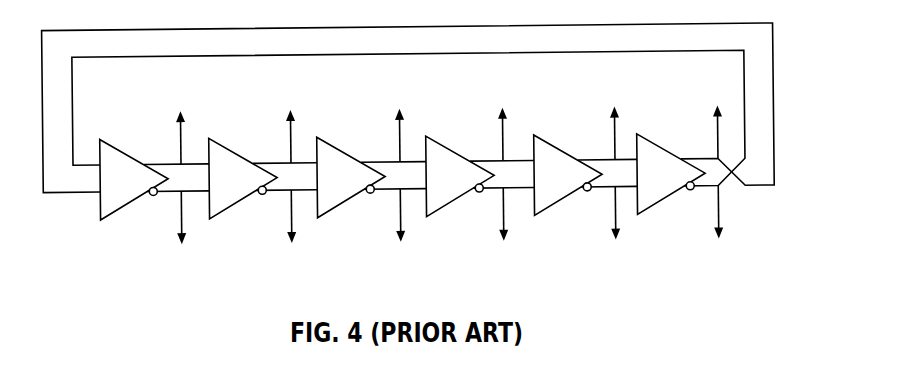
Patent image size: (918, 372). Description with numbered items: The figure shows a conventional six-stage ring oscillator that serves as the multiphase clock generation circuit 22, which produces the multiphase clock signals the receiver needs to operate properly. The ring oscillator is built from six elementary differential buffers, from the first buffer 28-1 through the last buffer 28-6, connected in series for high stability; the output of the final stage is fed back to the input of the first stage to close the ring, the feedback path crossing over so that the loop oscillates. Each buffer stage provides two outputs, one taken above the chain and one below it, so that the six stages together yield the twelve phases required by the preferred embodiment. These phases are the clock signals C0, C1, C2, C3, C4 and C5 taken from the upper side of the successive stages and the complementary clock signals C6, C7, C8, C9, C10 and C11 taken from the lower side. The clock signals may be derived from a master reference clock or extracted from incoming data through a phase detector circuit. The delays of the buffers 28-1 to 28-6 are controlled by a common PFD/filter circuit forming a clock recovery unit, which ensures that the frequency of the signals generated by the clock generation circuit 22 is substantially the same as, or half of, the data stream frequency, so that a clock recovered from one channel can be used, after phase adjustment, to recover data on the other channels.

The multiphase clock generation circuit 22 is at (780, 81).
The elementary differential buffer 28-1 is at (118, 148).
The elementary differential buffer 28-6 is at (660, 206).
The multiphase clock signal C0 is at (180, 127).
The multiphase clock signal C1 is at (290, 126).
The multiphase clock signal C2 is at (399, 125).
The multiphase clock signal C3 is at (502, 124).
The multiphase clock signal C4 is at (614, 122).
The multiphase clock signal C5 is at (717, 121).
The multiphase clock signal C6 is at (181, 229).
The multiphase clock signal C7 is at (291, 228).
The multiphase clock signal C8 is at (400, 227).
The multiphase clock signal C9 is at (503, 226).
The multiphase clock signal C10 is at (615, 224).
The multiphase clock signal C11 is at (718, 223).